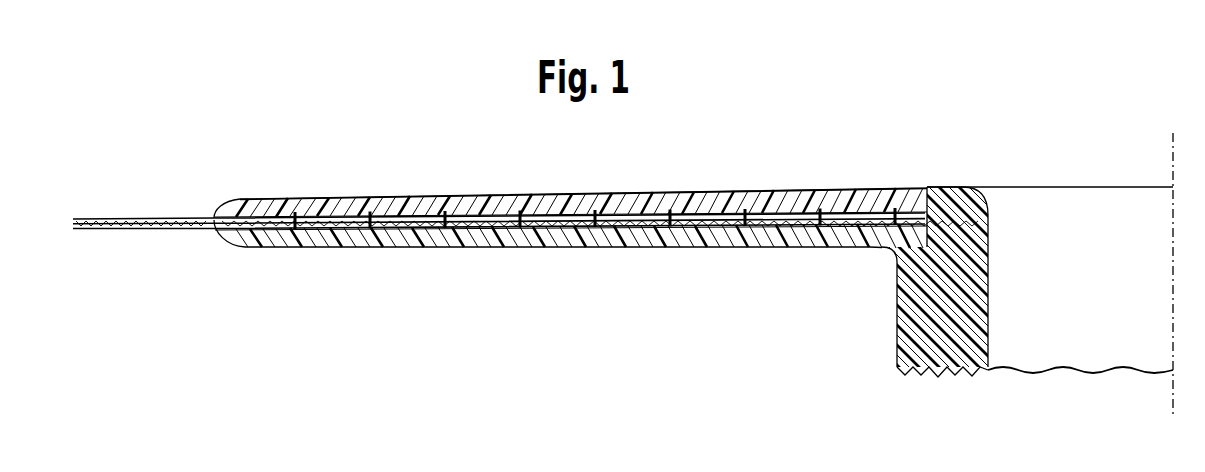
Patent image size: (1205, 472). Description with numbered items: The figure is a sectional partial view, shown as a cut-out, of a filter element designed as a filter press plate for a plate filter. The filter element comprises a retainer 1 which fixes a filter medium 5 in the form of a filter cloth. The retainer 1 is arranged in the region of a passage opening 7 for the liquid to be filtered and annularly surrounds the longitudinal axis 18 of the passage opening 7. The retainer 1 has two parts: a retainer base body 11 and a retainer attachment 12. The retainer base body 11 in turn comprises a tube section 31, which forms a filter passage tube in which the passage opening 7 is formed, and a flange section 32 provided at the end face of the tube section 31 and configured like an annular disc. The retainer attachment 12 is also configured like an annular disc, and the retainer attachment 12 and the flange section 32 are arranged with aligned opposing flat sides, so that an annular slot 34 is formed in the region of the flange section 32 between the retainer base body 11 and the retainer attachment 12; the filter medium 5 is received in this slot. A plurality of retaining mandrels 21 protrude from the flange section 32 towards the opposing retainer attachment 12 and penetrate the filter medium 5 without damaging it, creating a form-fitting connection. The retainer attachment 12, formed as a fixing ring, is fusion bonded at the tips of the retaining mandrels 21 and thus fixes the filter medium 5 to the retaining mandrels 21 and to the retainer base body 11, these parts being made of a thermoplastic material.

The retainer 1 is at (1003, 159).
The filter medium 5 is at (400, 198).
The passage opening 7 is at (1110, 287).
The retainer base body 11 is at (780, 250).
The retainer attachment 12 is at (800, 190).
The longitudinal axis 18 is at (1173, 396).
The retaining mandrels 21 is at (459, 225).
The tube section 31 is at (981, 324).
The flange section 32 is at (622, 248).
The annular slot 34 is at (627, 195).